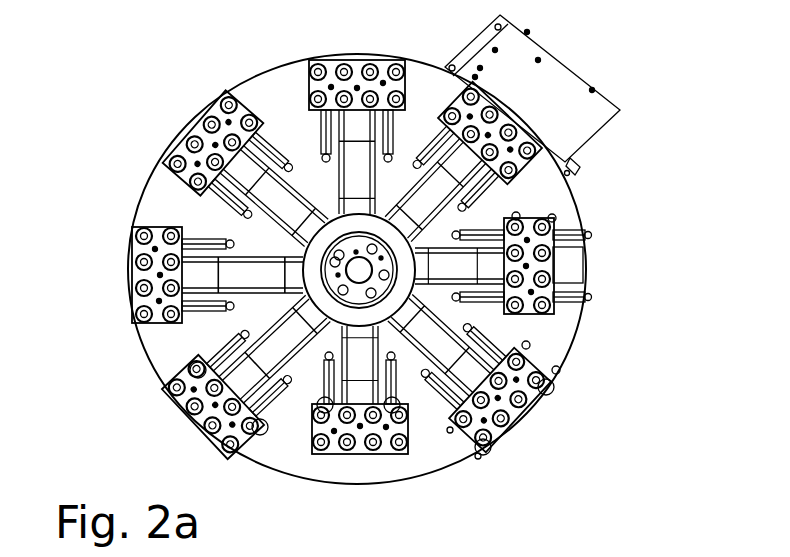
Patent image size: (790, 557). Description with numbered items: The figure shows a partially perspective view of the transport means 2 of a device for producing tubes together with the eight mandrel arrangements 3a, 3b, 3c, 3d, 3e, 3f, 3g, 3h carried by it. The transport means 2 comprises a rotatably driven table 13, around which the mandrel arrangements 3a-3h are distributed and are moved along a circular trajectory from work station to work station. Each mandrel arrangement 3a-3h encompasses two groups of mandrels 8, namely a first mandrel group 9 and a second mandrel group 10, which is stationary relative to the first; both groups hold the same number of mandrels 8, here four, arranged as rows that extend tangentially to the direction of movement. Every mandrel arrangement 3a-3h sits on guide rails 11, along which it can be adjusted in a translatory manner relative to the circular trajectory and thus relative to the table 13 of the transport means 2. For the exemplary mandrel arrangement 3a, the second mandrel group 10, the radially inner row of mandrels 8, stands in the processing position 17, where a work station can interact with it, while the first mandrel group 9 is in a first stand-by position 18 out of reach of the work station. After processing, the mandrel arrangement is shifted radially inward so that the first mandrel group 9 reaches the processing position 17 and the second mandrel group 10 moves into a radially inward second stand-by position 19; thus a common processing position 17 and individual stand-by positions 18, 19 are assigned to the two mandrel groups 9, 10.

The transport means 2 is at (620, 357).
The mandrel arrangement 3a is at (545, 433).
The mandrel arrangement 3b is at (583, 260).
The mandrel arrangement 3c is at (462, 105).
The mandrel arrangement 3d is at (345, 62).
The mandrel arrangement 3e is at (212, 145).
The mandrel arrangement 3f is at (133, 278).
The mandrel arrangement 3g is at (192, 430).
The mandrel arrangement 3h is at (350, 458).
The mandrel 8 is at (197, 368).
The first mandrel group 9 is at (553, 212).
The second mandrel group 10 is at (518, 212).
The guide rails 11 is at (583, 235).
The table 13 is at (568, 208).
The processing position 17 is at (450, 432).
The first stand-by position 18 is at (478, 457).
The second stand-by position 19 is at (433, 410).